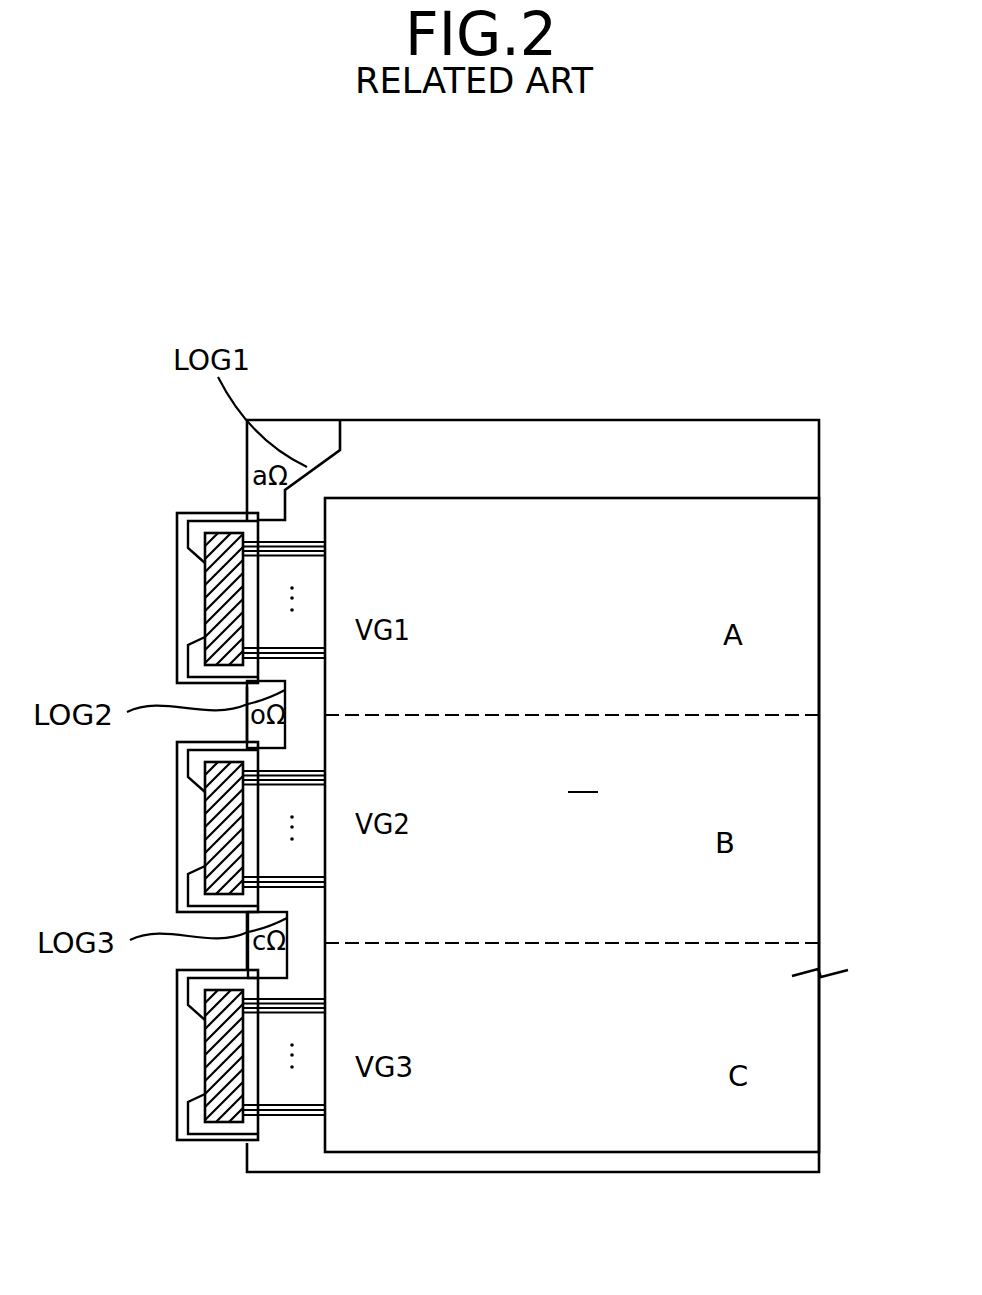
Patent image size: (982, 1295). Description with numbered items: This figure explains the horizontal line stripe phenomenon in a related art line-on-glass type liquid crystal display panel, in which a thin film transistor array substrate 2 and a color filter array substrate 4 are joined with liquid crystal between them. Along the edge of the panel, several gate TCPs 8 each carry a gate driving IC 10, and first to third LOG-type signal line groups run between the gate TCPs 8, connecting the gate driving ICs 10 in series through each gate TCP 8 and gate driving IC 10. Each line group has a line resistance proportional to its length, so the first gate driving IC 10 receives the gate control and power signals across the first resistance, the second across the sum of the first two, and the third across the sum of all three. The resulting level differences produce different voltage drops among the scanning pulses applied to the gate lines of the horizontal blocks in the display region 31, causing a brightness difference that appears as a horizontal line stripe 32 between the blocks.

The thin film transistor array substrate 2 is at (808, 478).
The color filter array substrate 4 is at (803, 541).
The gate TCP 8 is at (177, 563).
The gate driving IC 10 is at (205, 620).
The pixel array region 31 is at (583, 779).
The horizontal line stripe 32 is at (773, 715).